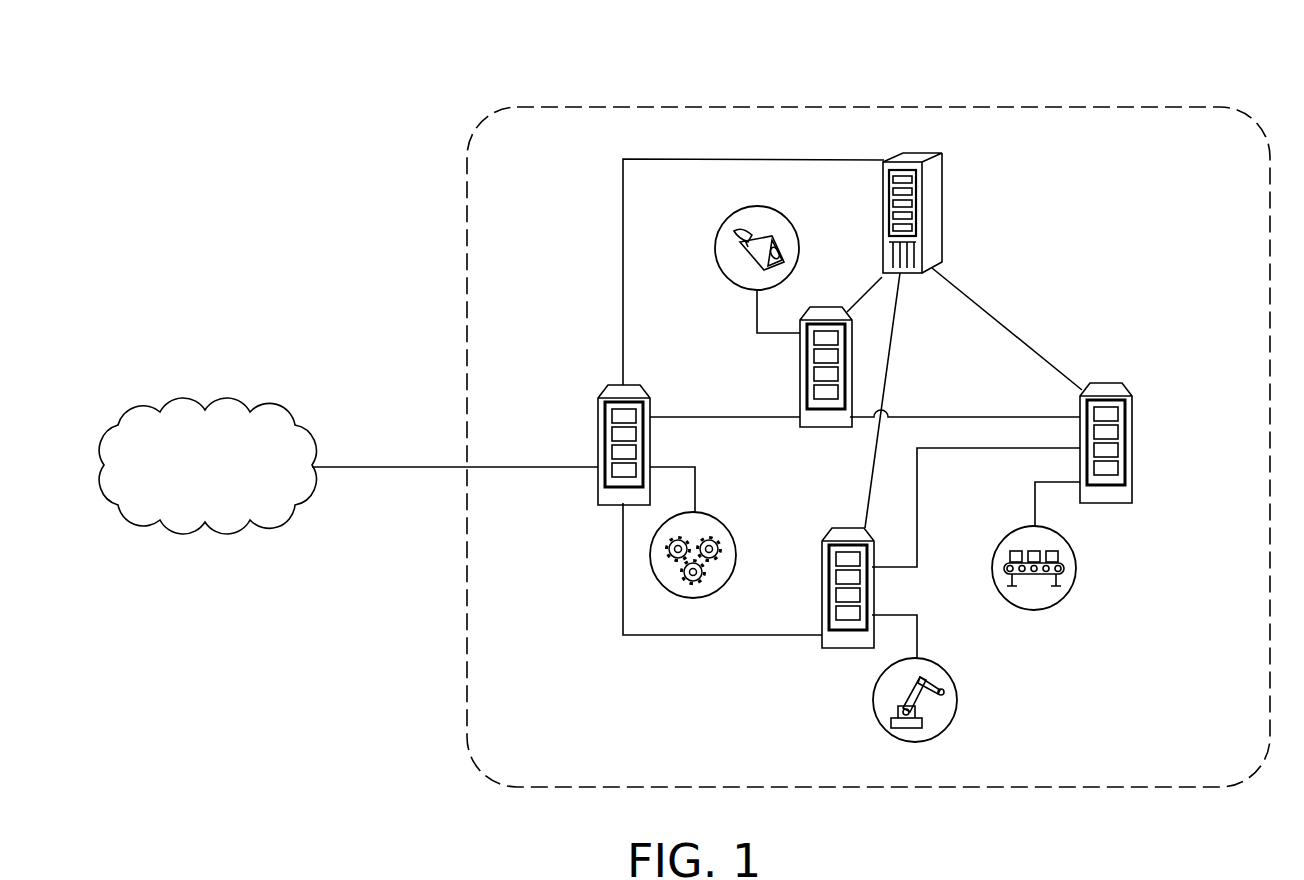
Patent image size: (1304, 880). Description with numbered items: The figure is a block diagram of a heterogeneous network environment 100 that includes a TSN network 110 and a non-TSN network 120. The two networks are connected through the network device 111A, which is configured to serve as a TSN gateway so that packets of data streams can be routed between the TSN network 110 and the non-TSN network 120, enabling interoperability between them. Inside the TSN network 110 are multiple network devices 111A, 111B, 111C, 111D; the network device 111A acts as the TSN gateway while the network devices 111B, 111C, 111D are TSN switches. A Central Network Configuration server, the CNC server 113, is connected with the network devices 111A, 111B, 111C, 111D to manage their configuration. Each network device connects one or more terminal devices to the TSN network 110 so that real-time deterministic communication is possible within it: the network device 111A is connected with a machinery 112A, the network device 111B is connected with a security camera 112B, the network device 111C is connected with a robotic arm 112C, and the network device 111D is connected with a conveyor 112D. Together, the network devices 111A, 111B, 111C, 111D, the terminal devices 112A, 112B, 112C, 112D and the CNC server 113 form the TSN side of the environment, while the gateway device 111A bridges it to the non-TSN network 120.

The heterogeneous network environment 100 is at (183, 121).
The TSN network 110 is at (872, 108).
The non-TSN network 120 is at (205, 408).
The network device 111A is at (598, 418).
The network device 111B is at (800, 374).
The network device 111C is at (872, 593).
The network device 111D is at (1130, 448).
The machinery 112A is at (700, 514).
The security camera 112B is at (757, 206).
The robotic arm 112C is at (930, 660).
The conveyor 112D is at (1077, 565).
The CNC server 113 is at (943, 205).